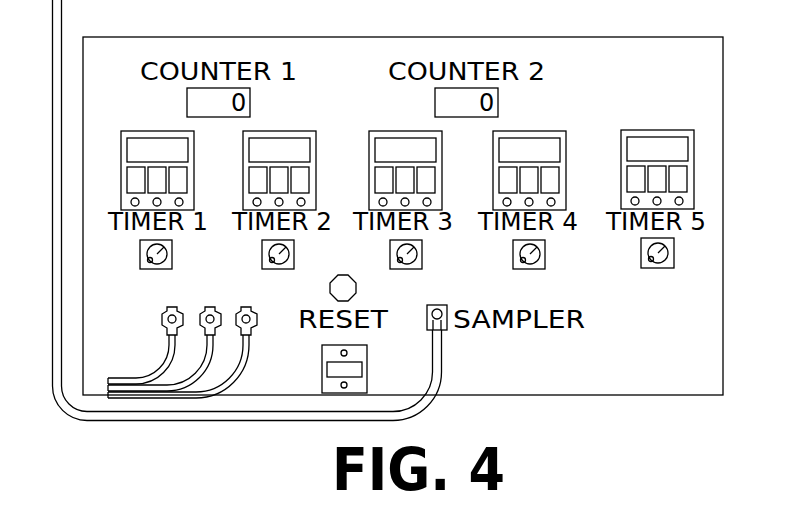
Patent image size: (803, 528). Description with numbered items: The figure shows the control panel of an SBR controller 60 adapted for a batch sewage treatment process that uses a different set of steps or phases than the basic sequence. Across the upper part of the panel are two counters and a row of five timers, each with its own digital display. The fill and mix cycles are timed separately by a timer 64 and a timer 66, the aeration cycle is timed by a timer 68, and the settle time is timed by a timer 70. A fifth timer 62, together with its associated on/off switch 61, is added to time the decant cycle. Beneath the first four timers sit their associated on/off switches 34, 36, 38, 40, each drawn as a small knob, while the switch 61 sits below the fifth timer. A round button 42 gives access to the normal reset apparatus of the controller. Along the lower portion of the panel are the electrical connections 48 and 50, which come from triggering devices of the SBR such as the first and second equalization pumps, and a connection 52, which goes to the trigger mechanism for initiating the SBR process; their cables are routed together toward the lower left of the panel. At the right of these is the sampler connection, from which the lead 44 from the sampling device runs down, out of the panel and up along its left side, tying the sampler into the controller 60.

The on/off switch 34 is at (140, 256).
The on/off switch 36 is at (262, 256).
The on/off switch 38 is at (390, 256).
The on/off switch 40 is at (513, 256).
The button 42 is at (357, 288).
The lead 44 is at (53, 156).
The electrical connection 48 is at (168, 309).
The electrical connection 50 is at (209, 307).
The connection 52 is at (262, 300).
The SBR controller 60 is at (728, 110).
The on/off switch 61 is at (641, 256).
The fifth timer 62 is at (652, 130).
The timer 64 is at (134, 131).
The timer 66 is at (243, 157).
The timer 68 is at (369, 149).
The timer 70 is at (567, 145).